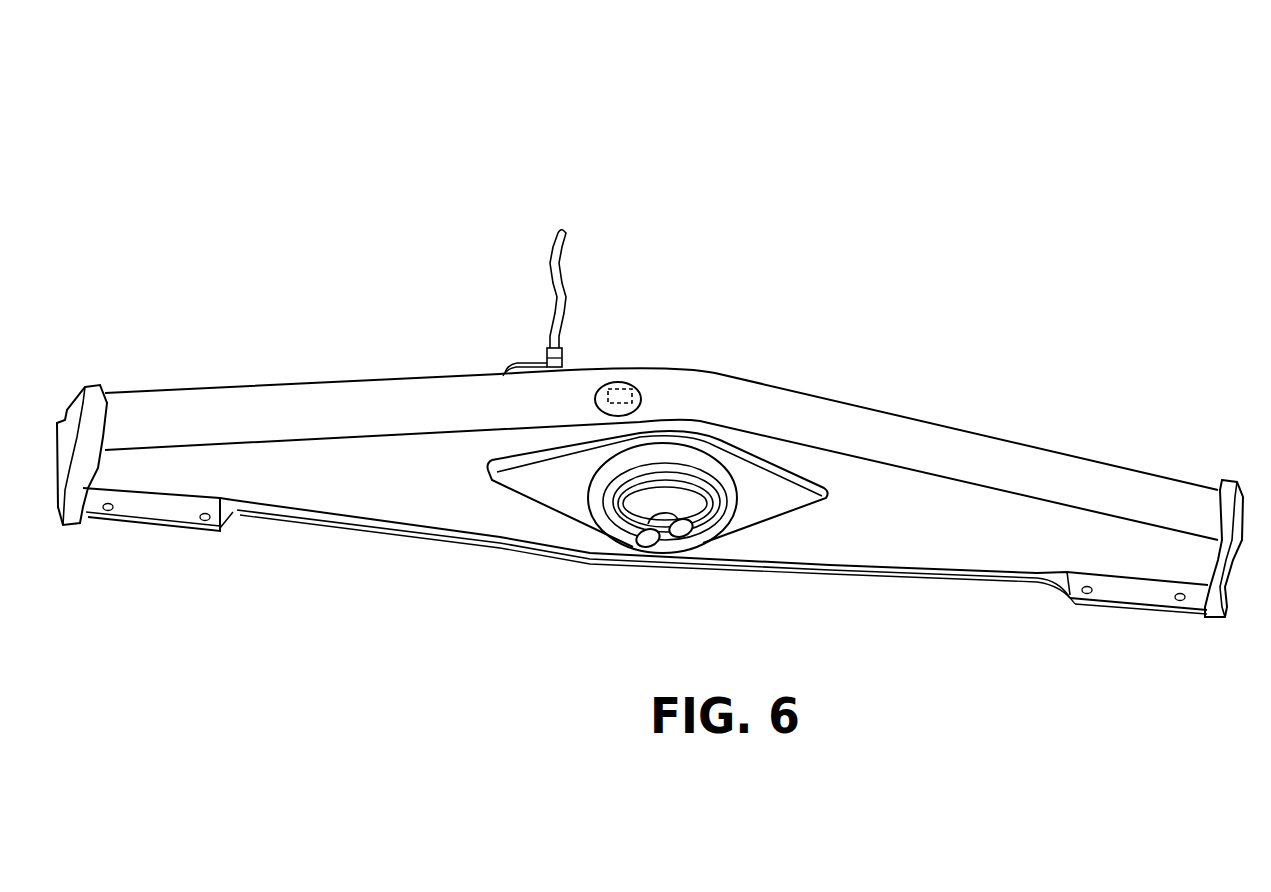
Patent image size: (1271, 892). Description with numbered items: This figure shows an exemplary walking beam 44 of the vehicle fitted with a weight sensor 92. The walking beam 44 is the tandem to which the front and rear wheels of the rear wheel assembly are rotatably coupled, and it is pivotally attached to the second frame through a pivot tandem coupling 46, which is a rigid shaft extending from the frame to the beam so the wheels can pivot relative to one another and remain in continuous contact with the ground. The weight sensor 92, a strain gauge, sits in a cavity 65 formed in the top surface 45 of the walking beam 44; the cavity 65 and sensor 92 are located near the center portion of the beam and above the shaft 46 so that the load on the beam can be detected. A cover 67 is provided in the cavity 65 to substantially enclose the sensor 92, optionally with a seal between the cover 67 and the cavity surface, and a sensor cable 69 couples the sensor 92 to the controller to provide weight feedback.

The walking beam 44 is at (645, 579).
The top surface 45 is at (888, 436).
The pivot tandem coupling 46 is at (703, 560).
The cavity 65 is at (590, 402).
The cover 67 is at (643, 403).
The sensor cable 69 is at (562, 248).
The weight sensor 92 is at (625, 388).